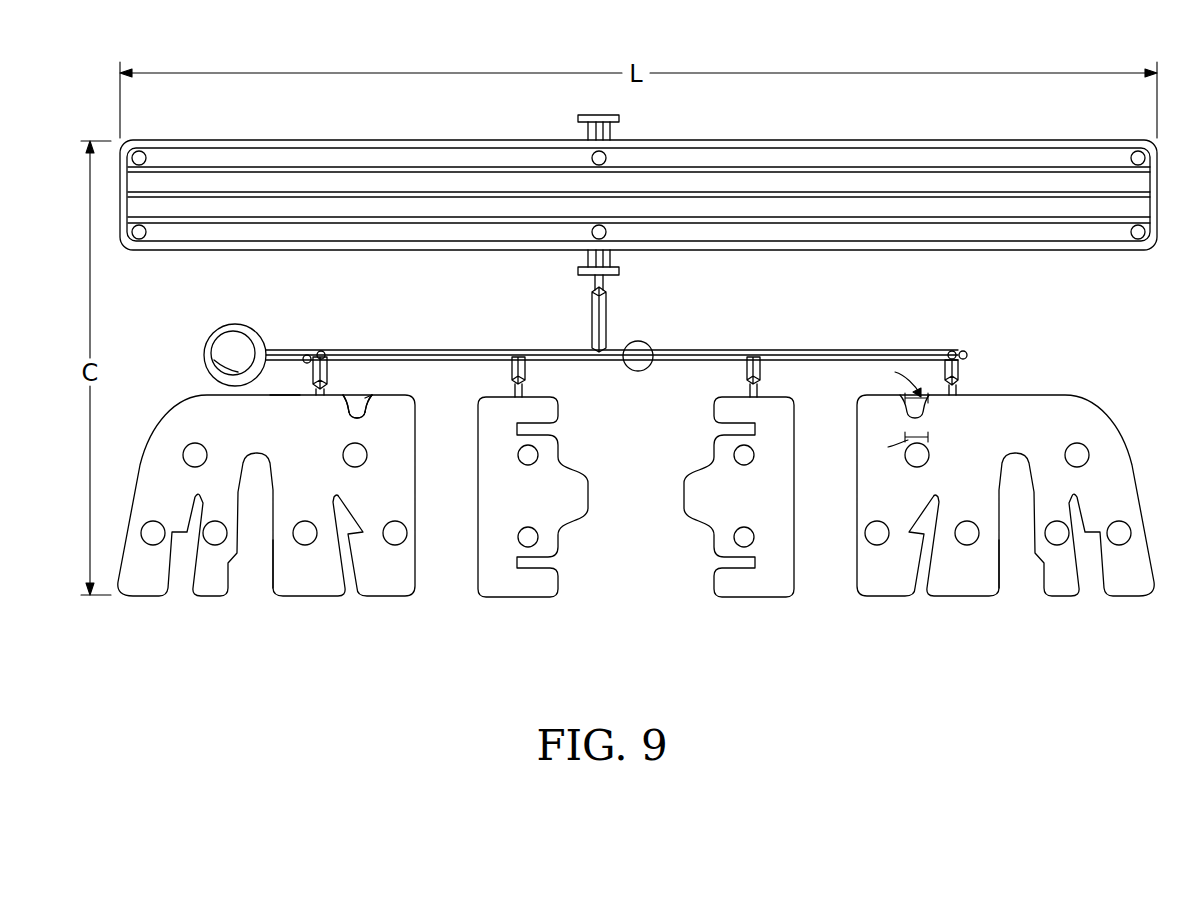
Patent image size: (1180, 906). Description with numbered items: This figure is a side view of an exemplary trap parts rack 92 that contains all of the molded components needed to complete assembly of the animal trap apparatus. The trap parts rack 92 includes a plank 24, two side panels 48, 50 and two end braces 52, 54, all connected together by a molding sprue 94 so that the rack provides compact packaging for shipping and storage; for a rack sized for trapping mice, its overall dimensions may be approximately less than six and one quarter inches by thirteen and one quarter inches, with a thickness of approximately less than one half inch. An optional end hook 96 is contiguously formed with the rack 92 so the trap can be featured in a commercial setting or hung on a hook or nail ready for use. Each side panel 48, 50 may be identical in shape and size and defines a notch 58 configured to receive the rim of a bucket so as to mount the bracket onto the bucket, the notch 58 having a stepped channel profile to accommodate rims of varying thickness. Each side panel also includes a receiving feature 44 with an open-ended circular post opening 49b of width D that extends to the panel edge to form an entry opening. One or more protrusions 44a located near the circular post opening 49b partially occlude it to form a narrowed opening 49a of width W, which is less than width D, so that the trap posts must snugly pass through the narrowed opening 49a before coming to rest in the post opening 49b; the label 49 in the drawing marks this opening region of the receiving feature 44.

The plank 24 is at (333, 251).
The molding sprue 94 is at (684, 351).
The end hook 96 is at (212, 357).
The side panel 48 is at (153, 586).
The side panel 50 is at (958, 588).
The end brace 52 is at (520, 584).
The end brace 54 is at (753, 588).
The notch 58 is at (268, 552).
The receiving feature 44 is at (343, 400).
The protrusion 44a is at (345, 411).
The top edge 49 is at (278, 395).
The narrowed opening 49a is at (367, 400).
The circular post opening 49b is at (353, 428).
The trap parts rack 92 is at (413, 640).